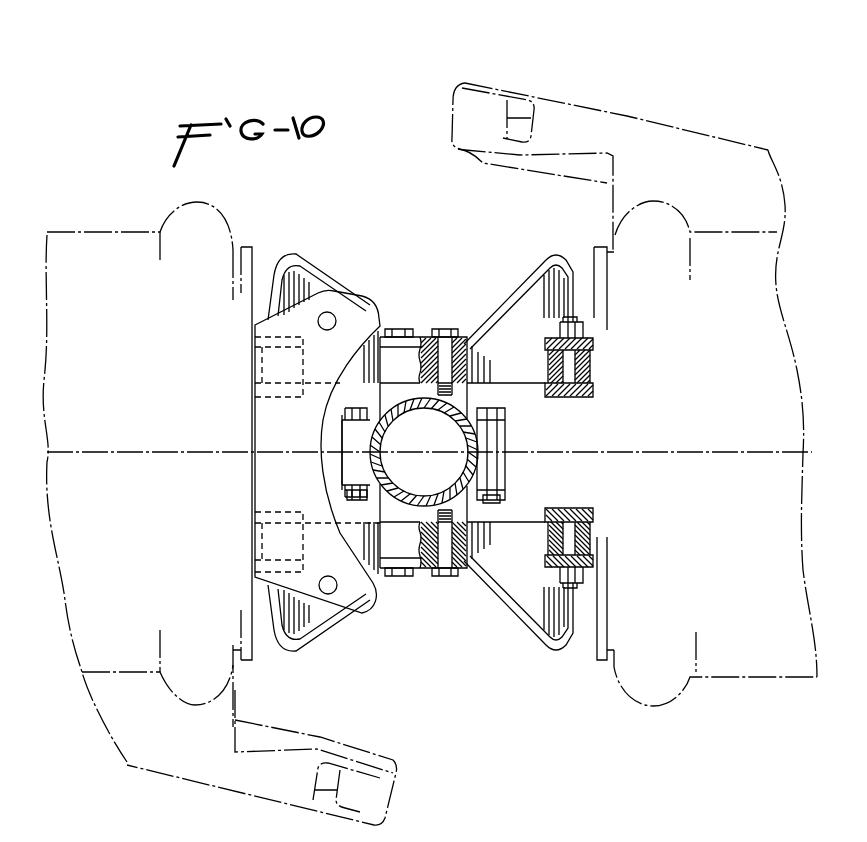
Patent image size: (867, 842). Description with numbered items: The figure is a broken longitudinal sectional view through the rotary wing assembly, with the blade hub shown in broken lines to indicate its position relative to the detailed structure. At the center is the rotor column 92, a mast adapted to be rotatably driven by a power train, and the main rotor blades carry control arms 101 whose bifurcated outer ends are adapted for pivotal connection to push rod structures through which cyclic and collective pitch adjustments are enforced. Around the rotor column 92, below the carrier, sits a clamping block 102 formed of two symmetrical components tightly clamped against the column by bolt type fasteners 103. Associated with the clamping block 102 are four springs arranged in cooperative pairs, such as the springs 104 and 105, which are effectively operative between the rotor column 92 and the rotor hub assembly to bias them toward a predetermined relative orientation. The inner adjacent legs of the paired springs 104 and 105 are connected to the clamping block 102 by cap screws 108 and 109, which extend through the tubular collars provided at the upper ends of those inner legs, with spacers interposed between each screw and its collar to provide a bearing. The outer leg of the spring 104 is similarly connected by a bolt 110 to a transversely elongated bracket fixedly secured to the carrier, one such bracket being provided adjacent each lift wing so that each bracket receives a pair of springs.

The rotor column 92 is at (400, 497).
The control arm 101 is at (531, 94).
The clamping block 102 is at (513, 434).
The bolt type fasteners 103 is at (490, 482).
The spring 104 is at (521, 613).
The spring 105 is at (320, 626).
The cap screw 108 is at (447, 577).
The cap screw 109 is at (398, 577).
The bolt 110 is at (575, 541).